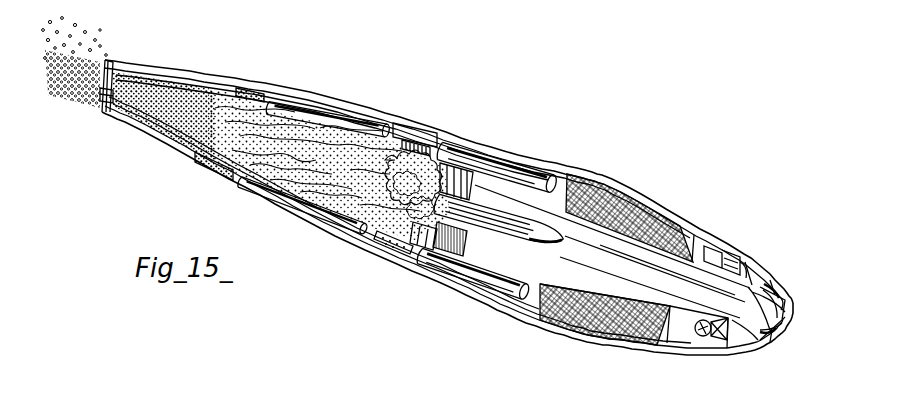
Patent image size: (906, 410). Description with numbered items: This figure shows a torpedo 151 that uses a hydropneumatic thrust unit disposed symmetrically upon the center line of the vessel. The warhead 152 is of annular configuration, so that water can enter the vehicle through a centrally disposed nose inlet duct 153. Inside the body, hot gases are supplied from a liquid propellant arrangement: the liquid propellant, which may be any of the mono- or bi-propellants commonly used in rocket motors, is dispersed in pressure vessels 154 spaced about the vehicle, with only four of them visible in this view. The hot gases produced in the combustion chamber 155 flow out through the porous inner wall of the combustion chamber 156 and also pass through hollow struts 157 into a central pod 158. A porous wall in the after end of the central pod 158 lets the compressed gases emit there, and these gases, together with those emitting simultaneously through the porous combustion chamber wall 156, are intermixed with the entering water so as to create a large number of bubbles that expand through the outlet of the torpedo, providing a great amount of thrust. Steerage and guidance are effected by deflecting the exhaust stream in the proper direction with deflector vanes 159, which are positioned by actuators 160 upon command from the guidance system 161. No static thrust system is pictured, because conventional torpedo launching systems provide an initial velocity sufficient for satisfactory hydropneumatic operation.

The torpedo 151 is at (350, 104).
The warhead 152 is at (600, 324).
The nose inlet duct 153 is at (783, 342).
The pressure vessels 154 is at (360, 123).
The combustion chamber 155 is at (390, 248).
The porous inner wall of the combustion chamber 156 is at (428, 131).
The hollow struts 157 is at (437, 266).
The central pod 158 is at (478, 228).
The deflector vanes 159 is at (88, 114).
The actuators 160 is at (243, 97).
The guidance system 161 is at (695, 338).